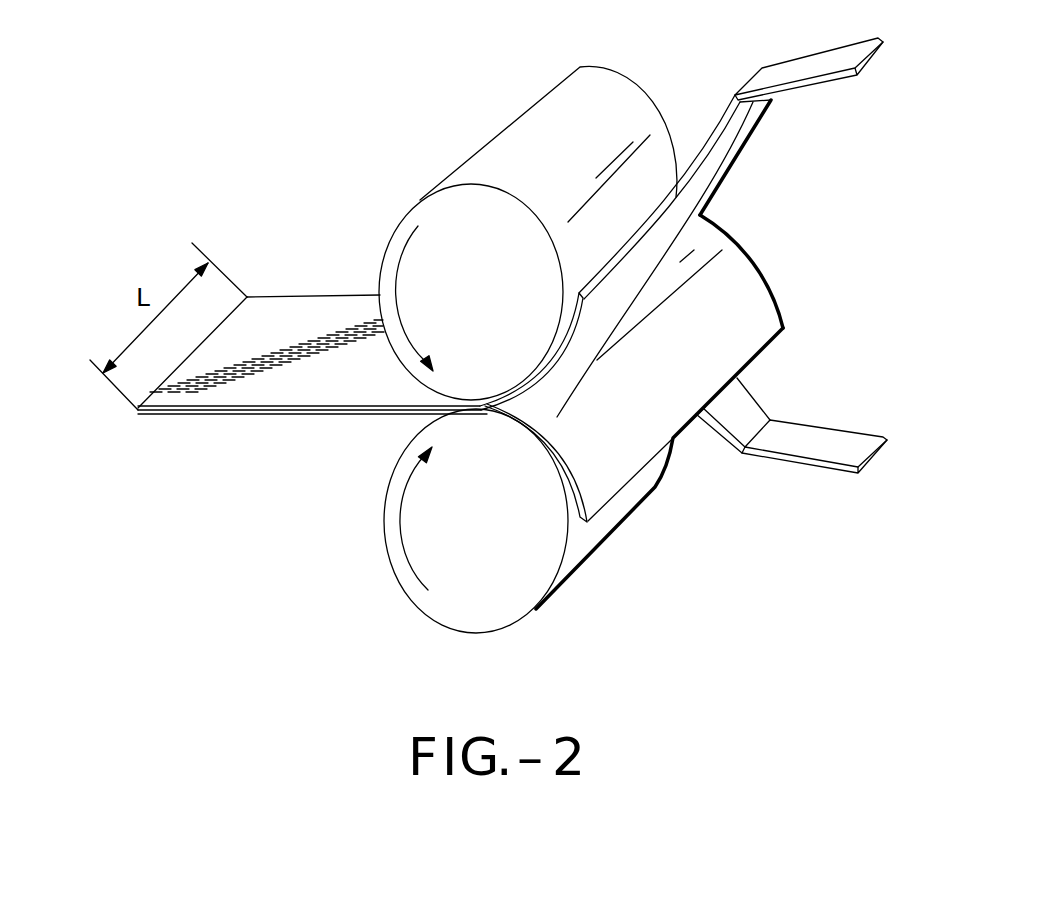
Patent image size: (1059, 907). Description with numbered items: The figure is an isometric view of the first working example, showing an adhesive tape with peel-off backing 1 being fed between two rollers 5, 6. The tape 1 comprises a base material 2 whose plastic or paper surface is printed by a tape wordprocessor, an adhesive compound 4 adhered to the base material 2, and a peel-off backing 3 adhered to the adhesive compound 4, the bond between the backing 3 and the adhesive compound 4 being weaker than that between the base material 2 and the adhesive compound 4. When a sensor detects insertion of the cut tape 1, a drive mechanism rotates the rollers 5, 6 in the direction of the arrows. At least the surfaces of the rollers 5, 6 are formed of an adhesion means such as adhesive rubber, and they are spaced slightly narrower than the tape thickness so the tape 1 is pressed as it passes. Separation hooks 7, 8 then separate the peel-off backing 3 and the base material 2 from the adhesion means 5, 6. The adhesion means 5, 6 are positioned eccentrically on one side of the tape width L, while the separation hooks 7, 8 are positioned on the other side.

The adhesive tape with peel-off backing 1 is at (337, 199).
The base material 2 is at (277, 322).
The peel-off backing 3 is at (228, 418).
The adhesive compound 4 is at (137, 410).
The roller 5 is at (610, 97).
The roller 6 is at (485, 617).
The separation hook 7 is at (803, 70).
The separation hook 8 is at (818, 450).